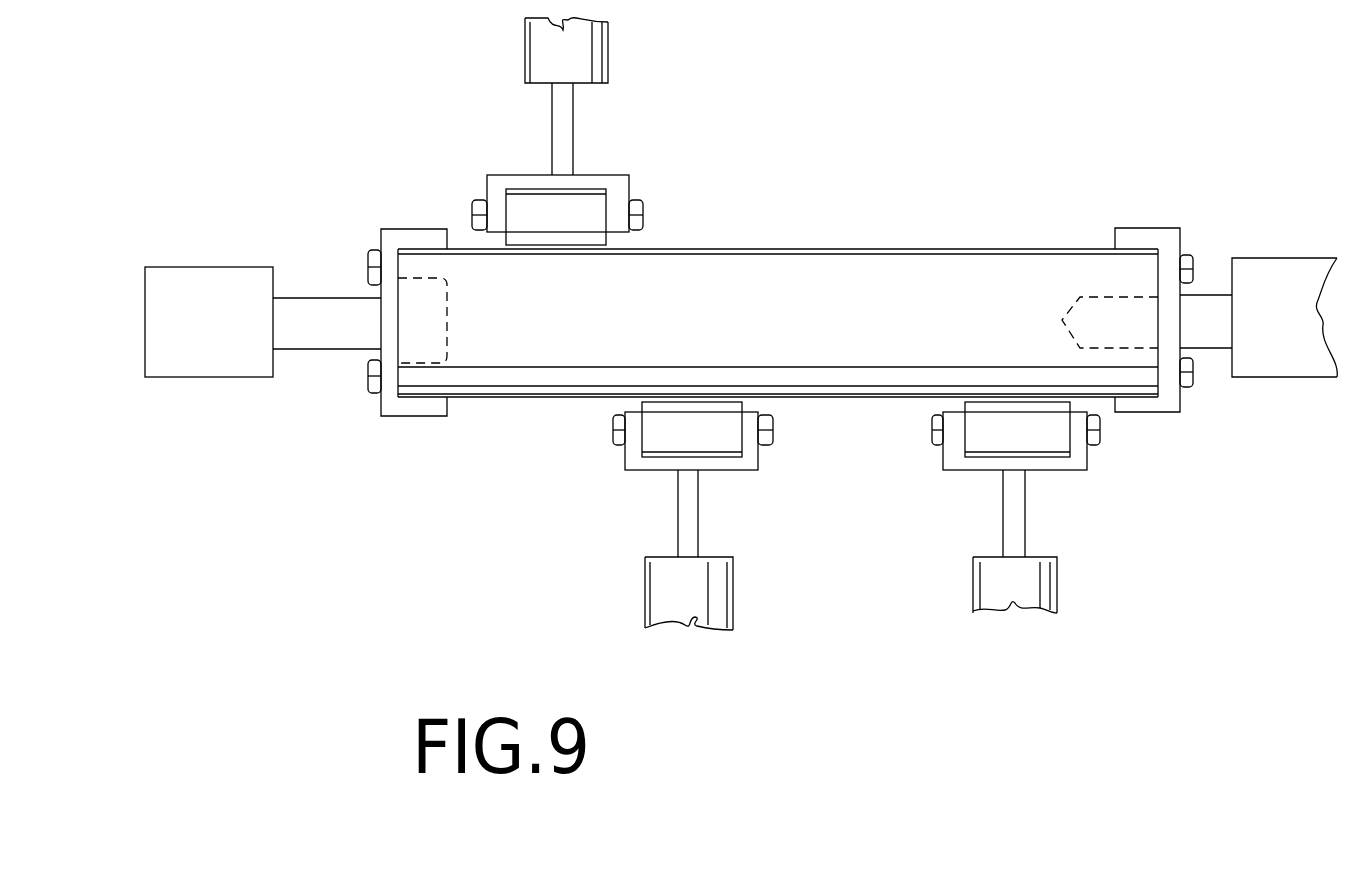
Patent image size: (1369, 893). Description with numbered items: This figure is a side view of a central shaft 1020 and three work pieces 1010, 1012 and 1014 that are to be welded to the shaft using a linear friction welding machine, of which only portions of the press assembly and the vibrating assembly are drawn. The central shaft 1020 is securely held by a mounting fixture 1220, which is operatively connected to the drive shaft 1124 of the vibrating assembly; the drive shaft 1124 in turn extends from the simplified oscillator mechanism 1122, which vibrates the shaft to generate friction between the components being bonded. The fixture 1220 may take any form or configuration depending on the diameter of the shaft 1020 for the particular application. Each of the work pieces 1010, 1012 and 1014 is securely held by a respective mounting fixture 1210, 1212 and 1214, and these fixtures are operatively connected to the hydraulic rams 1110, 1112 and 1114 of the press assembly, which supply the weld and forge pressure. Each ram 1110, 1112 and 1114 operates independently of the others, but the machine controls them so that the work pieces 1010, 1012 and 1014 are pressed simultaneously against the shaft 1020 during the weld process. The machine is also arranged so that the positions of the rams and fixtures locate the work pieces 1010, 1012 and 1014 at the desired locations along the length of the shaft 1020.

The work piece 1010 is at (578, 216).
The work piece 1012 is at (660, 432).
The work piece 1014 is at (1040, 434).
The central shaft 1020 is at (978, 243).
The hydraulic ram 1110 is at (595, 60).
The hydraulic ram 1112 is at (692, 590).
The hydraulic ram 1114 is at (1013, 578).
The oscillator mechanism 1122 is at (212, 292).
The drive shaft 1124 is at (325, 318).
The mounting fixture 1210 is at (517, 183).
The mounting fixture 1212 is at (735, 463).
The mounting fixture 1214 is at (960, 465).
The mounting fixture 1220 is at (400, 405).